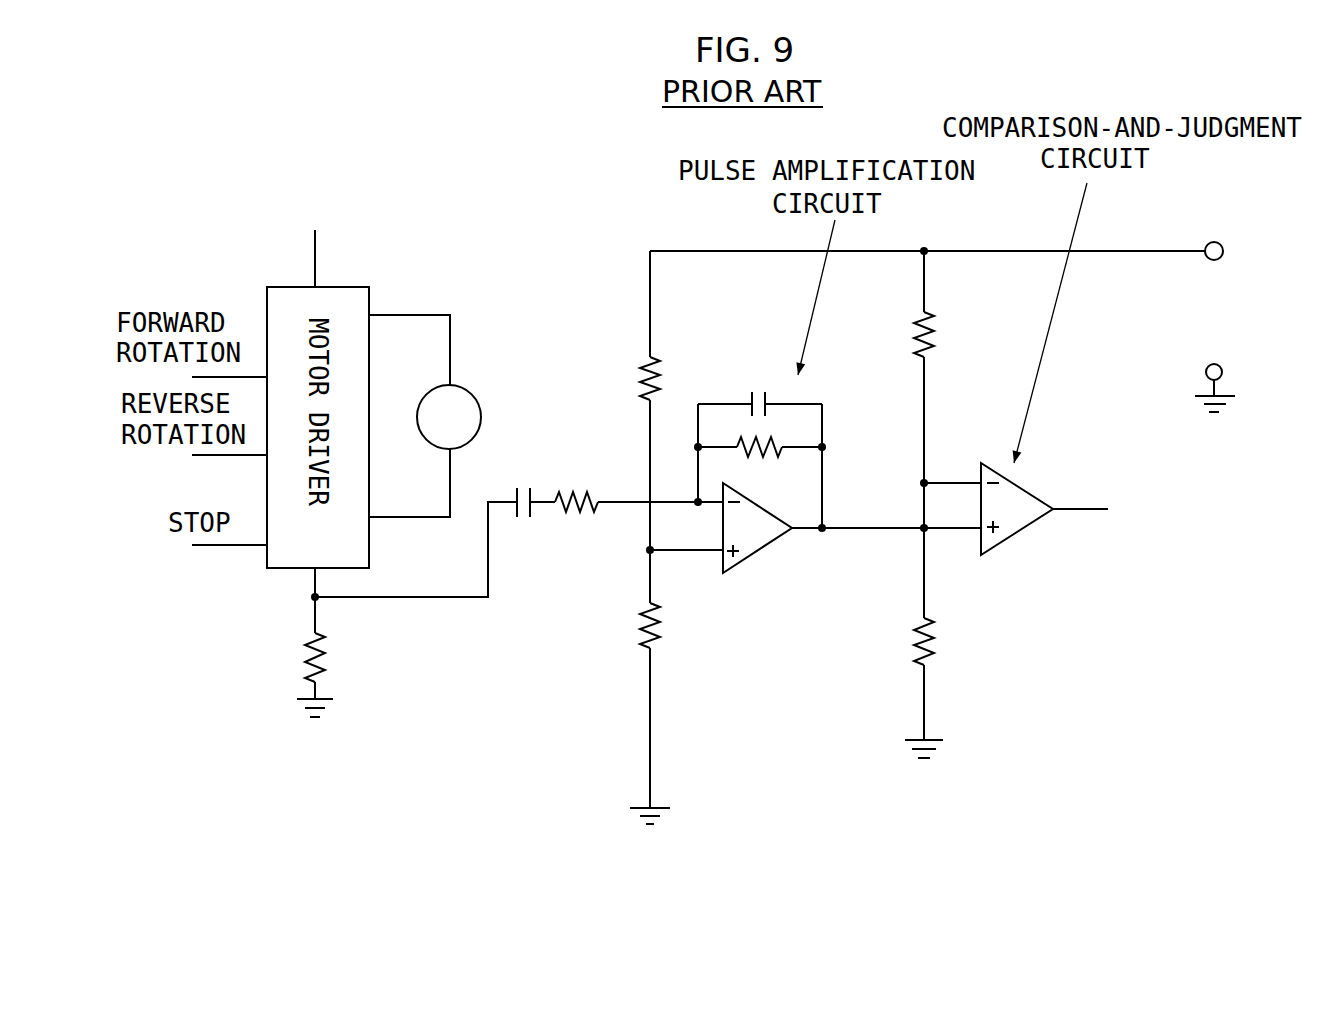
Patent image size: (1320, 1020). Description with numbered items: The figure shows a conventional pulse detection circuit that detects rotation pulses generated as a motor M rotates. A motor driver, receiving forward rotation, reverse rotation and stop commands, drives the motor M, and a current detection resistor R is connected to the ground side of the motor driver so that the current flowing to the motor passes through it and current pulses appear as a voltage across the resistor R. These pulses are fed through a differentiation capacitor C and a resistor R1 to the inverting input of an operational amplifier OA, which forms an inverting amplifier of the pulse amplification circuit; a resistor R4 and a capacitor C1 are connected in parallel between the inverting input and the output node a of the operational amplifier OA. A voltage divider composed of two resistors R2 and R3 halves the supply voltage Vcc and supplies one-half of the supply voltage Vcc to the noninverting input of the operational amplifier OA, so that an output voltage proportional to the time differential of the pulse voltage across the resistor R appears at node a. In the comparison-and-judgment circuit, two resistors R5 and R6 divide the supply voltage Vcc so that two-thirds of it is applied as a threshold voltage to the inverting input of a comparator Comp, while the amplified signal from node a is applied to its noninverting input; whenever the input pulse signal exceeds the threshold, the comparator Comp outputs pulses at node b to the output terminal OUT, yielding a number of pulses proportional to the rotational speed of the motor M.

The motor M is at (527, 215).
The current detection resistor R is at (250, 688).
The differentiation capacitor C is at (534, 486).
The resistor R1 is at (639, 483).
The resistor R2 is at (630, 378).
The resistor R3 is at (630, 625).
The feedback resistor R4 is at (760, 466).
The feedback capacitor C1 is at (760, 388).
The operational amplifier OA is at (752, 560).
The output node of pulse amplification circuit a is at (809, 541).
The resistor R5 is at (945, 334).
The resistor R6 is at (946, 641).
The comparator Comp is at (1008, 538).
The output node of comparator b is at (1066, 486).
The supply voltage Vcc is at (936, 236).
The output terminal OUT is at (1123, 510).